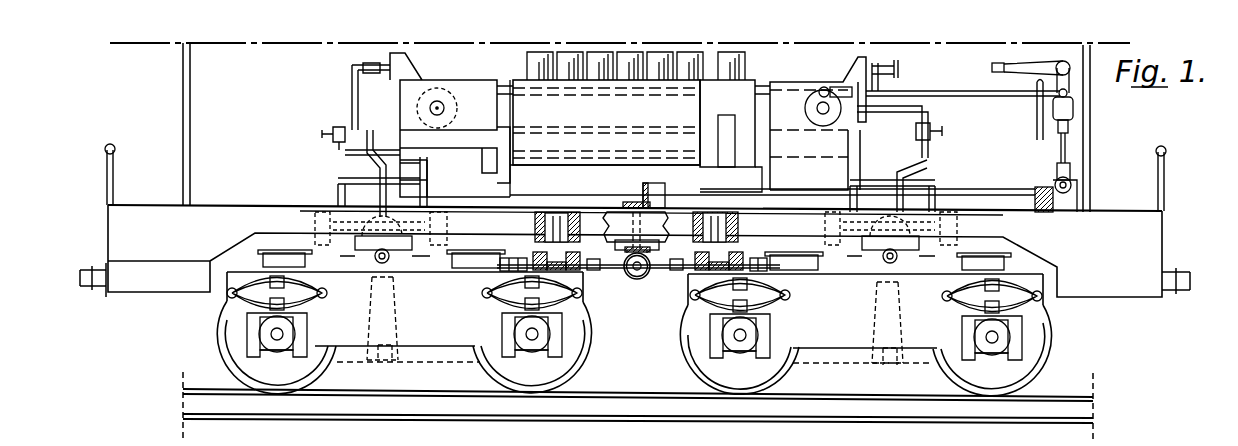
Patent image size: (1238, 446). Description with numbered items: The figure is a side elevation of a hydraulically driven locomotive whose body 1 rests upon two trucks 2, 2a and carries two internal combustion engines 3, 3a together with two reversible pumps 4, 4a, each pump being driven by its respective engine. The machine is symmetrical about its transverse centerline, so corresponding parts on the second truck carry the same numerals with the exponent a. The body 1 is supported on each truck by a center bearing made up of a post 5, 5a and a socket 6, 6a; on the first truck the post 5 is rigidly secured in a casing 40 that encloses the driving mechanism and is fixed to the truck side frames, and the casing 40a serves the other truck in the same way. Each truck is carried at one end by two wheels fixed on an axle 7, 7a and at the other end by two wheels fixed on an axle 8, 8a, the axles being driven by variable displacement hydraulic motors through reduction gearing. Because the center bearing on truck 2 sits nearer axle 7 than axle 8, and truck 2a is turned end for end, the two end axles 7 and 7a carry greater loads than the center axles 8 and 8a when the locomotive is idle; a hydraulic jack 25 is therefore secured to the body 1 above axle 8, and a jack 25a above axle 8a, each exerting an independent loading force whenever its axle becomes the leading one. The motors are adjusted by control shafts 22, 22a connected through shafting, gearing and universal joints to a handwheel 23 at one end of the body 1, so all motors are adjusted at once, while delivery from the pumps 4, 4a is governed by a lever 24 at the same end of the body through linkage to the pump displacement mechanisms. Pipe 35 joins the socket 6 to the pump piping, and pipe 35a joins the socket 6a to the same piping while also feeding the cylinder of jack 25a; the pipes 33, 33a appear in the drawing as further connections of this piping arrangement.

The body 1 is at (143, 203).
The truck 2 is at (360, 315).
The truck 2a is at (913, 360).
The internal combustion engine 3 is at (627, 124).
The internal combustion engine 3a is at (731, 136).
The reversible pump 4 is at (451, 125).
The reversible pump 4a is at (810, 123).
The post 5 is at (380, 309).
The post 5a is at (880, 318).
The socket 6 is at (415, 245).
The socket 6a is at (895, 262).
The axle 7 is at (283, 334).
The axle 7a is at (986, 337).
The axle 8 is at (526, 334).
The axle 8a is at (747, 336).
The control shaft 22 is at (320, 254).
The control shaft 22a is at (950, 264).
The handwheel 23 is at (1037, 132).
The lever 24 is at (992, 71).
The hydraulic jack 25 is at (507, 226).
The hydraulic jack 25a is at (755, 226).
The pipe 33 is at (427, 170).
The pipe 33a is at (935, 182).
The pipe 35 is at (367, 160).
The pipe 35a is at (913, 165).
The casing 40 is at (445, 367).
The casing 40a is at (861, 377).